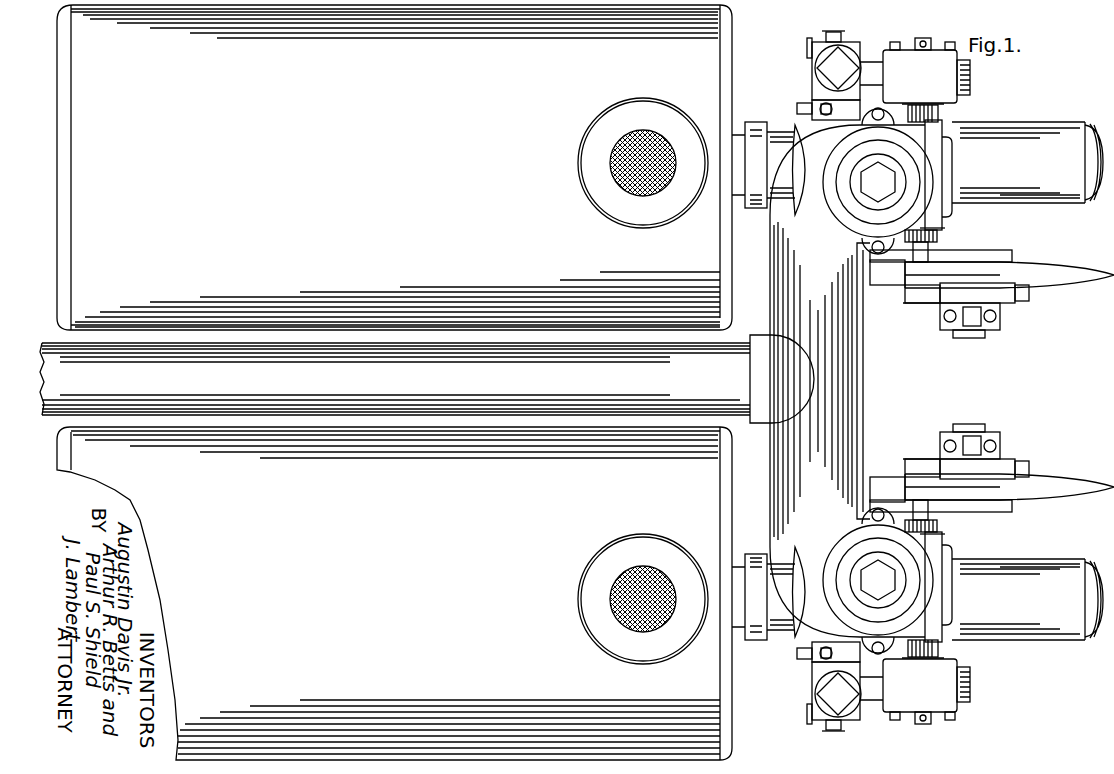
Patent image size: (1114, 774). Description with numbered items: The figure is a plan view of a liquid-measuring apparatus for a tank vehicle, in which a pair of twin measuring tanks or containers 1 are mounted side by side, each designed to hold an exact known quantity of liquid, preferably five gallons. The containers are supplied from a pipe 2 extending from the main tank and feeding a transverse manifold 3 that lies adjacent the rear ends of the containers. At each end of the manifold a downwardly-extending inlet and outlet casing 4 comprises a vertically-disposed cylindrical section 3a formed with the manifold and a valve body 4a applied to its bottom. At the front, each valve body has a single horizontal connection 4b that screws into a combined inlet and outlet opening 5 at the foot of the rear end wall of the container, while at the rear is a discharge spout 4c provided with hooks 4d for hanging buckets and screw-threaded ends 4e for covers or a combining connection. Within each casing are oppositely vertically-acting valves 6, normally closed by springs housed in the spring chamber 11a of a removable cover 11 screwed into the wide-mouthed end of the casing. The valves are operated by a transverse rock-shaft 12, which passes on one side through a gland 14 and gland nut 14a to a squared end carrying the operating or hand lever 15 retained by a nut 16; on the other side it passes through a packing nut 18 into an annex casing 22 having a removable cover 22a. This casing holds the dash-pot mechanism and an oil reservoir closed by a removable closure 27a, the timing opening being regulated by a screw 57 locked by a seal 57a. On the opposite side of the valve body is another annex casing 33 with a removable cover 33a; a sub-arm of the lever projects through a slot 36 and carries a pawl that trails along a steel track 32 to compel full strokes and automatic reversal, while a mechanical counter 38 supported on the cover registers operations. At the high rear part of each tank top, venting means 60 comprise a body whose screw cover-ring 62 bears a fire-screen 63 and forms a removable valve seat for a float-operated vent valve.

The measuring tanks or containers 1 is at (66, 114).
The pipe 2 is at (62, 345).
The transverse manifold 3 is at (770, 295).
The cylindrical section 3a is at (834, 558).
The inlet and outlet casings 4 is at (950, 165).
The valve body 4a is at (950, 152).
The horizontally-disposed connection 4b is at (797, 655).
The discharge spout 4c is at (1037, 655).
The hooks 4d is at (1078, 610).
The screw-threaded ends 4e is at (1092, 660).
The combined inlet and outlet opening 5 is at (755, 122).
The valves 6 is at (813, 468).
The removable cover 11 is at (856, 222).
The spring chamber 11a is at (866, 584).
The rock-shaft 12 is at (932, 252).
The gland 14 is at (943, 178).
The gland nut 14a is at (948, 226).
The operating or hand lever 15 is at (1058, 276).
The nut 16 is at (946, 296).
The packing nut 18 is at (940, 114).
The annex casing 22 is at (884, 58).
The removable cover 22a is at (920, 740).
The removable closure 27a is at (815, 692).
The steel track 32 is at (886, 288).
The annex casing 33 is at (1000, 252).
The removable cover 33a is at (935, 459).
The slot 36 is at (925, 303).
The mechanical counter 38 is at (985, 338).
The screw 57 is at (833, 31).
The seal 57a is at (798, 722).
The venting means 60 is at (578, 165).
The screw cover-ring 62 is at (592, 190).
The fire-screen 63 is at (648, 132).